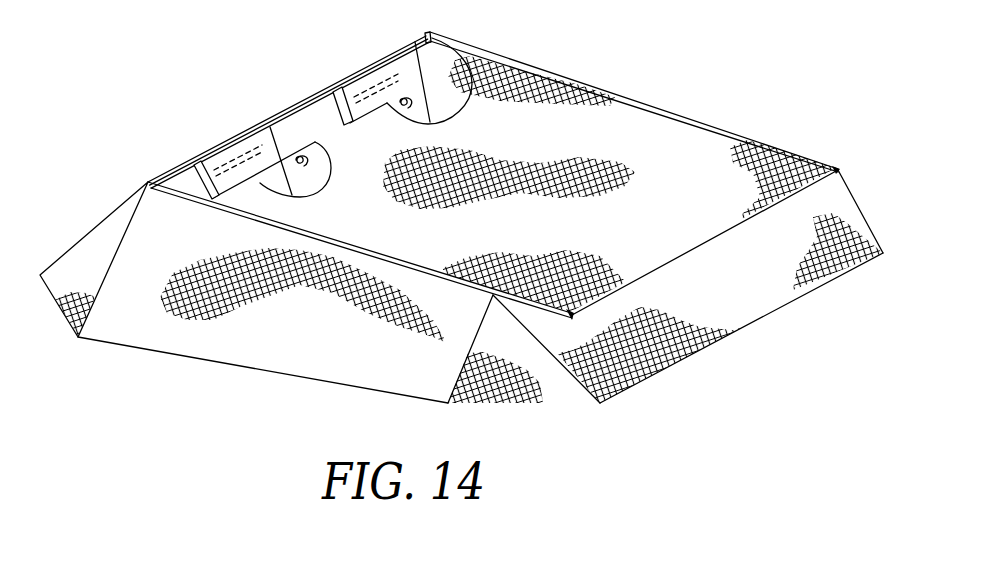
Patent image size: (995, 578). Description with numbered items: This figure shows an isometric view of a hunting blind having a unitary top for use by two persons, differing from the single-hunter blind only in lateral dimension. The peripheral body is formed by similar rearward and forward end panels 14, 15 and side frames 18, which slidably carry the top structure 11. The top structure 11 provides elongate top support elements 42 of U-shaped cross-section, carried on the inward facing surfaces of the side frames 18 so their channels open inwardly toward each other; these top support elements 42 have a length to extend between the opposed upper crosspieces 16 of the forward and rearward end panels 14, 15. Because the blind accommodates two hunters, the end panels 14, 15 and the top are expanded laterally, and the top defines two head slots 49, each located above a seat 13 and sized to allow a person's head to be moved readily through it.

The top structure 11 is at (670, 100).
The seat 13 is at (403, 64).
The rearward end panel 14 is at (313, 90).
The forward end panel 15 is at (786, 320).
The upper crosspiece 16 is at (196, 167).
The side frame 18 is at (312, 382).
The top support element 42 is at (455, 40).
The head slot 49 is at (300, 170).